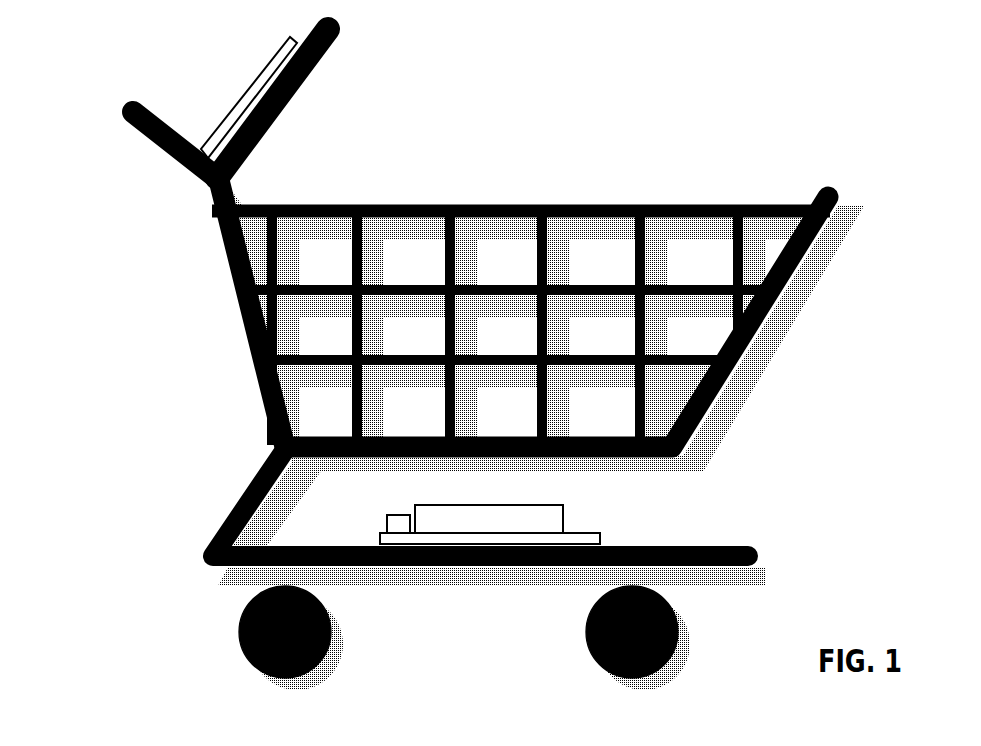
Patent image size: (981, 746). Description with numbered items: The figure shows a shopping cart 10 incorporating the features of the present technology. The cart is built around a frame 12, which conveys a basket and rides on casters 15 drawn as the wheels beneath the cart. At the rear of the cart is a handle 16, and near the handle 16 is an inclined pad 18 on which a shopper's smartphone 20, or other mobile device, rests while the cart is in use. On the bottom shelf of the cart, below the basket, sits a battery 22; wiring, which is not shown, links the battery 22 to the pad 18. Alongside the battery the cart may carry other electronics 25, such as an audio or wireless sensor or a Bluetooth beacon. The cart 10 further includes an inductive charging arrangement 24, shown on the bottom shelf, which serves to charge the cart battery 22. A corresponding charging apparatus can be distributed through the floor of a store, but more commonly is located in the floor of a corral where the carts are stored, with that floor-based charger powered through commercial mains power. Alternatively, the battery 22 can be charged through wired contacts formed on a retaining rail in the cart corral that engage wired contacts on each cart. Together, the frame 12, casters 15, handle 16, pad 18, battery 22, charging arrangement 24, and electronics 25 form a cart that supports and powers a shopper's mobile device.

The shopping cart 10 is at (850, 201).
The frame 12 is at (502, 346).
The casters 15 is at (677, 633).
The handle 16 is at (128, 112).
The inclined pad 18 is at (293, 100).
The smartphone 20 is at (266, 76).
The battery 22 is at (563, 515).
The inductive charging arrangement 24 is at (600, 540).
The other electronics 25 is at (385, 521).